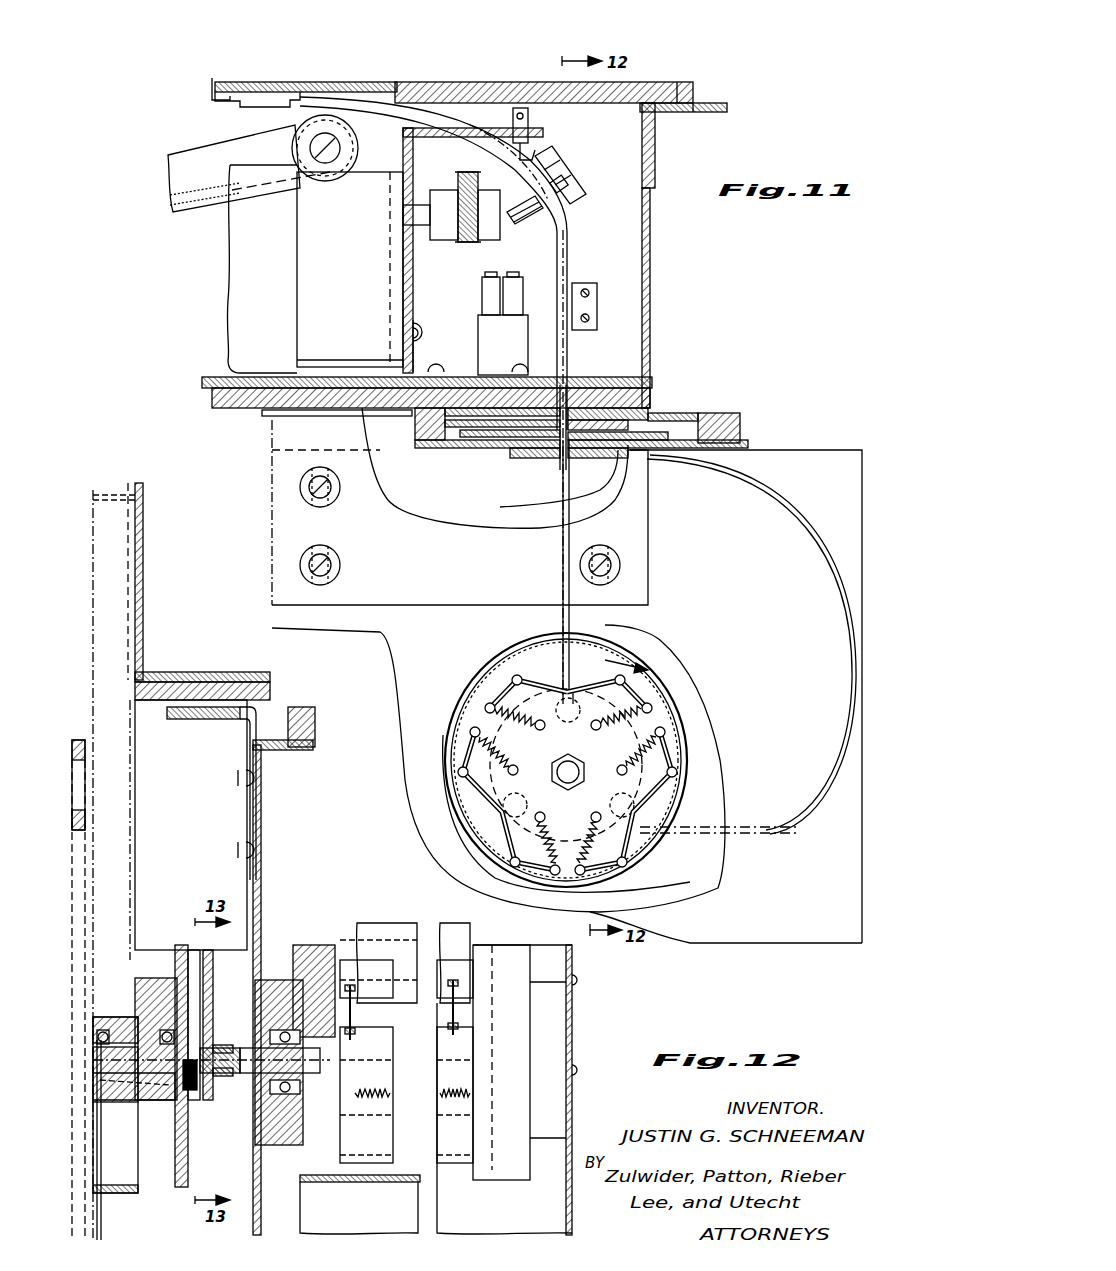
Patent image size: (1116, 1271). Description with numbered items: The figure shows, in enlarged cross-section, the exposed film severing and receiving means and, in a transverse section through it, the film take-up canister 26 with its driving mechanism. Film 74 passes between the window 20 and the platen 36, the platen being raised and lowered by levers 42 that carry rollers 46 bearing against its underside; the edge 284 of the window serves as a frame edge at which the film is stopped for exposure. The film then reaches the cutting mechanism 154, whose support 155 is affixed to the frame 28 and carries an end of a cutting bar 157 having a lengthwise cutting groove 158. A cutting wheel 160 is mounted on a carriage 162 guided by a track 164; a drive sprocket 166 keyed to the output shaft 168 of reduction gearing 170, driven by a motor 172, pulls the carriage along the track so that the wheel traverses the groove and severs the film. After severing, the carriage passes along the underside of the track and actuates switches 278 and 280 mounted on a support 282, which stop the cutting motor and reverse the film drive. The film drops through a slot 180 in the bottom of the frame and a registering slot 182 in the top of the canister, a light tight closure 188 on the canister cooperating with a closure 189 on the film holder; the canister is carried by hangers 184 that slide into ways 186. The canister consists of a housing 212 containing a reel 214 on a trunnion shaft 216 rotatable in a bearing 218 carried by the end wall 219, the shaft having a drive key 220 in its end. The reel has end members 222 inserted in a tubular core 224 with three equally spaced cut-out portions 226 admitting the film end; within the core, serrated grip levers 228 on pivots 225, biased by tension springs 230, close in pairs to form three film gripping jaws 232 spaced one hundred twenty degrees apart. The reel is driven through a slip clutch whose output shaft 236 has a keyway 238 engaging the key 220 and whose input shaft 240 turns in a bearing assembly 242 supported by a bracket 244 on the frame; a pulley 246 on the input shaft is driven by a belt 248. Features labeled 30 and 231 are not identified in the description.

In FIG. 11, the window 20 is at (230, 82).
In FIG. 11, the cover plate 30 is at (560, 80).
In FIG. 11, the film 74 is at (212, 86).
In FIG. 12, the film 74 is at (564, 648).
In FIG. 11, the platen 36 is at (215, 99).
In FIG. 11, the frame edge 284 is at (400, 96).
In FIG. 11, the cutting mechanism 154 is at (610, 141).
In FIG. 11, the frame 28 is at (652, 322).
In FIG. 12, the frame 28 is at (143, 612).
In FIG. 11, the carriage 162 is at (512, 150).
In FIG. 11, the reduction gearing 170 is at (450, 182).
In FIG. 11, the motor 172 is at (232, 298).
In FIG. 11, the lever 42 is at (186, 156).
In FIG. 11, the roller 46 is at (298, 138).
In FIG. 11, the output shaft 168 is at (403, 212).
In FIG. 11, the drive sprocket 166 is at (458, 243).
In FIG. 11, the track 164 is at (484, 232).
In FIG. 11, the cutting wheel 160 is at (507, 203).
In FIG. 11, the cutting groove 158 is at (572, 174).
In FIG. 11, the cutting bar 157 is at (566, 194).
In FIG. 11, the switch 280 is at (482, 290).
In FIG. 11, the switch 278 is at (505, 296).
In FIG. 11, the support 282 is at (503, 345).
In FIG. 11, the support 155 is at (419, 336).
In FIG. 11, the slot 180 is at (567, 394).
In FIG. 11, the light tight closure 188 is at (700, 412).
In FIG. 11, the closure 189 is at (430, 443).
In FIG. 11, the slot 182 is at (558, 458).
In FIG. 11, the ways 186 is at (262, 416).
In FIG. 12, the ways 186 is at (222, 720).
In FIG. 11, the hangers 184 is at (272, 452).
In FIG. 12, the hangers 184 is at (246, 748).
In FIG. 12, the take-up canister 26 is at (786, 451).
In FIG. 12, the tension springs 230 is at (540, 730).
In FIG. 12, the film gripping jaws 232 is at (574, 692).
In FIG. 12, the tubular core 224 is at (456, 712).
In FIG. 12, the pivots 225 is at (504, 682).
In FIG. 12, the serrated grip levers 228 is at (656, 810).
In FIG. 12, the cut-out portions 226 is at (536, 664).
In FIG. 12, the belt 248 is at (74, 746).
In FIG. 12, the bracket 244 is at (145, 836).
In FIG. 12, the housing 212 is at (272, 752).
In FIG. 12, the end wall 219 is at (260, 858).
In FIG. 12, the section line 231 is at (182, 930).
In FIG. 12, the end members 222 is at (295, 952).
In FIG. 12, the bearing assembly 242 is at (150, 984).
In FIG. 12, the output shaft 236 is at (218, 1012).
In FIG. 12, the keyway 238 is at (214, 1046).
In FIG. 12, the trunnion shaft 216 is at (211, 1060).
In FIG. 12, the drive key 220 is at (226, 1077).
In FIG. 12, the input shaft 240 is at (146, 1078).
In FIG. 12, the bearing 218 is at (288, 1125).
In FIG. 12, the pulley 246 is at (93, 1216).
In FIG. 12, the reel 214 is at (360, 1204).